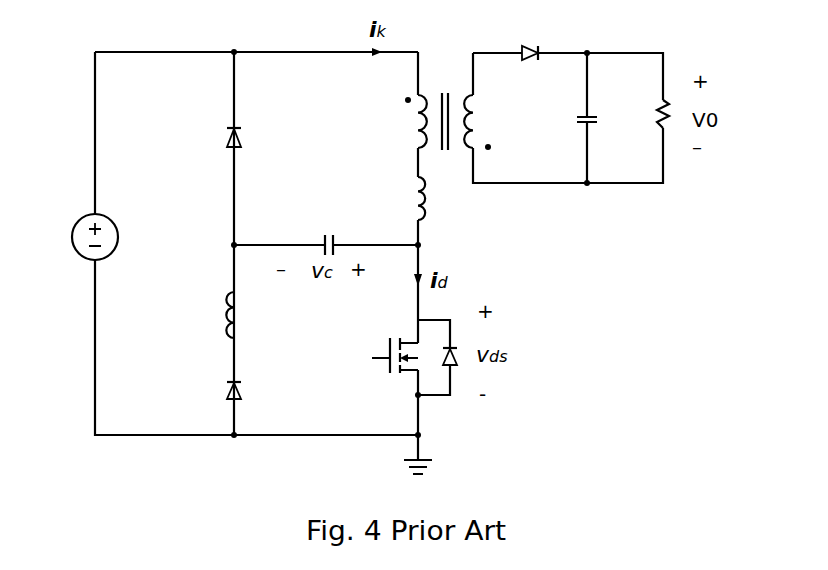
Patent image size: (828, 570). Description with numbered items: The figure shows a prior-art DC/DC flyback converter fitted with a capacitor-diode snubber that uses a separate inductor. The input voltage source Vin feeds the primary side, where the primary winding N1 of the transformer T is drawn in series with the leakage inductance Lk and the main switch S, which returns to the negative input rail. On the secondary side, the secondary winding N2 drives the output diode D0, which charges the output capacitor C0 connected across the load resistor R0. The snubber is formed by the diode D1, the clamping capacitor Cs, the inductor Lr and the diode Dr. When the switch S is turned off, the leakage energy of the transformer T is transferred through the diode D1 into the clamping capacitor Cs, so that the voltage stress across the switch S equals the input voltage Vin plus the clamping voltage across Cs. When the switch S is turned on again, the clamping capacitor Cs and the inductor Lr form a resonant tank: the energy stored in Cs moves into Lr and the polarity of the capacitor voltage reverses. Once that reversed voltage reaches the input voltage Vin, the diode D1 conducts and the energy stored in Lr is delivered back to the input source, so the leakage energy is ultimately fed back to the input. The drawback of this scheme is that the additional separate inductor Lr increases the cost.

The input voltage source Vin is at (116, 237).
The diode D1 is at (213, 139).
The inductor Lr is at (208, 315).
The diode Dr is at (214, 391).
The clamping capacitor Cs is at (328, 229).
The leakage inductance Lk is at (401, 195).
The transformer T is at (443, 106).
The primary winding N1 is at (396, 121).
The secondary winding N2 is at (492, 122).
The output diode D0 is at (531, 37).
The output capacitor C0 is at (571, 135).
The load resistor R0 is at (643, 126).
The switch S is at (414, 361).